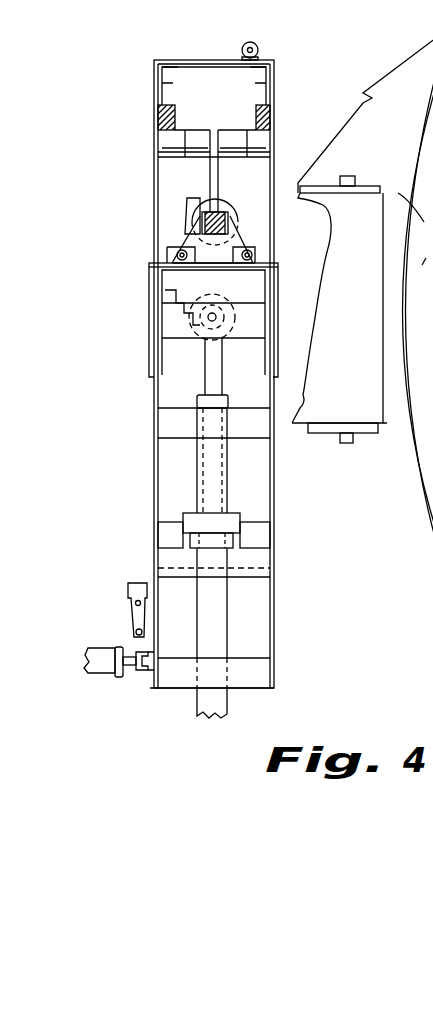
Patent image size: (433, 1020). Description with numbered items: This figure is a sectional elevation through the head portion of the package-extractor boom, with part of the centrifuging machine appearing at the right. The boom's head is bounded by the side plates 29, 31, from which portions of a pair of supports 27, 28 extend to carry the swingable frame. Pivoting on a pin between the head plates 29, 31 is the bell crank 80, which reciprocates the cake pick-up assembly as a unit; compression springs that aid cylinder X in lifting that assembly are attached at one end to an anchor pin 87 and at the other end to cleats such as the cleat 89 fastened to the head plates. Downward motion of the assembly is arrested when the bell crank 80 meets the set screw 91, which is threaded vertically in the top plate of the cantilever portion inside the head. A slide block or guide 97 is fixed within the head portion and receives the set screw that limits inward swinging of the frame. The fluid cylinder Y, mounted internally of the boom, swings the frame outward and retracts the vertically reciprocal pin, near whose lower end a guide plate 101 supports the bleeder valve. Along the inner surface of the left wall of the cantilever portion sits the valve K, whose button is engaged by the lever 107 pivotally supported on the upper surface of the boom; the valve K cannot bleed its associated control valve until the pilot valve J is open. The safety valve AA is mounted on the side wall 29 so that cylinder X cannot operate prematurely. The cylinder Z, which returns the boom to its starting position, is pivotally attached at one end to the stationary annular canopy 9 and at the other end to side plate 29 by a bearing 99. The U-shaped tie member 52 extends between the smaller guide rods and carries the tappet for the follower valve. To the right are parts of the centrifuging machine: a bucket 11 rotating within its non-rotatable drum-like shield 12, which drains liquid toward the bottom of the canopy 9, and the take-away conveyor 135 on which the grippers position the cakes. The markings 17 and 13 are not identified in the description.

The pilot valve J is at (262, 43).
The side plate 29 is at (158, 93).
The side plate 31 is at (274, 96).
The support 27 is at (158, 120).
The support 28 is at (274, 113).
The bell crank 80 is at (212, 128).
The lever 107 is at (195, 197).
The guide plate 101 is at (247, 244).
The valve K is at (198, 301).
The fluid cylinder Y is at (228, 302).
The anchor pin 87 is at (203, 366).
The slide block 97 is at (233, 432).
The set screw 91 is at (233, 513).
The cleat 89 is at (230, 550).
The valve AA is at (128, 600).
The cylinder Z is at (103, 674).
The bearing 99 is at (145, 673).
The take-away conveyor 135 is at (362, 338).
The annular canopy 9 is at (415, 453).
The drum-like shield 12 is at (405, 200).
The bucket 11 is at (422, 276).
The U-shaped tie member 52 is at (422, 327).
The cylinder part 17 is at (427, 427).
The cylinder part 13 is at (426, 607).